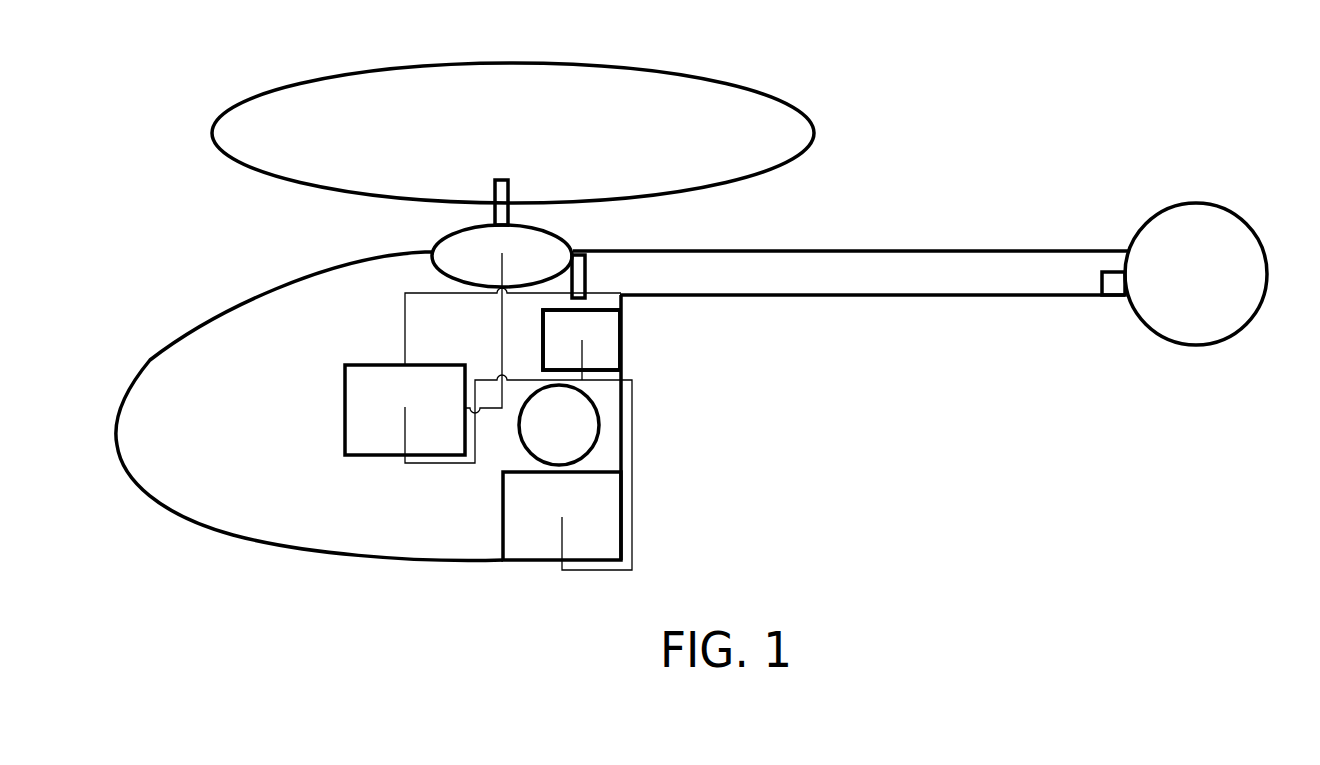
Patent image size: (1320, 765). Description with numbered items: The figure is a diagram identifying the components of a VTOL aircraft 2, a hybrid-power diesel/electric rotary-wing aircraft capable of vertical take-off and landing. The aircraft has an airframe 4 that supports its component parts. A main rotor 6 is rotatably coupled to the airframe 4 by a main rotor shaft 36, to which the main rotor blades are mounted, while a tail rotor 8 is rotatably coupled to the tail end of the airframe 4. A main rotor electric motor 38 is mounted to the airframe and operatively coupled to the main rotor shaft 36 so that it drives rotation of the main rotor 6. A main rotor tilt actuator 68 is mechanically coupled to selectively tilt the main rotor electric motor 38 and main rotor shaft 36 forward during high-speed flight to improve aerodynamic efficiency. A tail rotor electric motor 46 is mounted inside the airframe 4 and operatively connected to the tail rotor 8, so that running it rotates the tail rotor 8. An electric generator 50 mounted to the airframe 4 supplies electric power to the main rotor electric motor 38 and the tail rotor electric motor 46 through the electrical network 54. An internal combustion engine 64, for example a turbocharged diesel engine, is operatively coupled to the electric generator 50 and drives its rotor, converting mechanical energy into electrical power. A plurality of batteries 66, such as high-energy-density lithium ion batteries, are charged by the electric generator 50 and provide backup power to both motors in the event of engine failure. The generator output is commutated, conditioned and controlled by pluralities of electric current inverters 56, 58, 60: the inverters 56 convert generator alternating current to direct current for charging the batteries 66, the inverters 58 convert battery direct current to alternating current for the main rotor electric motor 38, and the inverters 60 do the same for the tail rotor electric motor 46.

The VTOL aircraft 2 is at (955, 95).
The airframe 4 is at (263, 548).
The main rotor 6 is at (722, 80).
The tail rotor 8 is at (1237, 200).
The main rotor shaft 36 is at (500, 212).
The main rotor electric motor 38 is at (560, 242).
The tail rotor electric motor 46 is at (1110, 298).
The electric generator 50 is at (598, 420).
The electrical network 54 is at (635, 462).
The electric current inverters 56 is at (610, 352).
The electric current inverters 58 is at (581, 340).
The electric current inverters 60 is at (581, 340).
The internal combustion engine 64 is at (611, 535).
The batteries 66 is at (352, 395).
The main rotor tilt actuator 68 is at (578, 268).